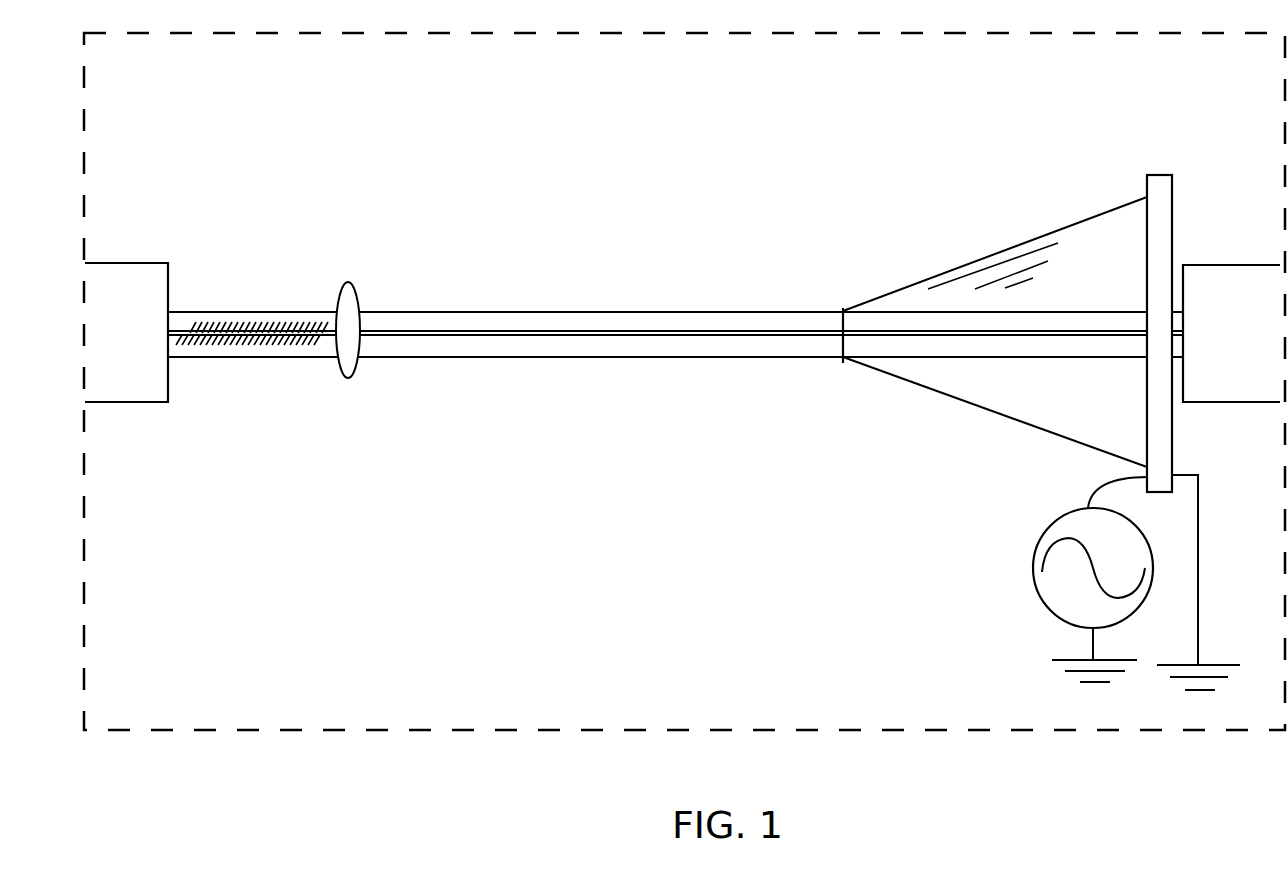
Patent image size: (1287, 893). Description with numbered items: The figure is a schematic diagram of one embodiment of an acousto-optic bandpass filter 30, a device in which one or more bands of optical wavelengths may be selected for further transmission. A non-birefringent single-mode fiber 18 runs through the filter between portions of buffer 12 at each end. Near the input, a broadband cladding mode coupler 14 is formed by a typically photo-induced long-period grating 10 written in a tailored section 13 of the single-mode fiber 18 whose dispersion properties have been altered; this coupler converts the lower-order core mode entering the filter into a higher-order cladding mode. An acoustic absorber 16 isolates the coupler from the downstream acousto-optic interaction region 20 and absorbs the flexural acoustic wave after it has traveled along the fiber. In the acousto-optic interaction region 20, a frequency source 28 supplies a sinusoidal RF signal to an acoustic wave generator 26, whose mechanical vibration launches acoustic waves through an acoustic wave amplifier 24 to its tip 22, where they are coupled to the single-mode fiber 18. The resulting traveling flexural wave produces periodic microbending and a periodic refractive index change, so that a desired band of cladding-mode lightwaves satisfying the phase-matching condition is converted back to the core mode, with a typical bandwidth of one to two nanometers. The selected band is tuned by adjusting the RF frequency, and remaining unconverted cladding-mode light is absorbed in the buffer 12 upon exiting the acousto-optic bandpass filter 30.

The long-period grating 10 is at (255, 343).
The buffer 12 is at (158, 404).
The tailored section 13 is at (193, 320).
The broadband cladding mode coupler 14 is at (343, 278).
The acoustic absorber 16 is at (345, 383).
The single-mode fiber 18 is at (605, 359).
The acousto-optic interaction region 20 is at (363, 305).
The tip 22 is at (843, 362).
The acoustic wave amplifier 24 is at (907, 383).
The acoustic wave generator 26 is at (1160, 176).
The frequency source 28 is at (1033, 556).
The acousto-optic bandpass filter 30 is at (388, 733).